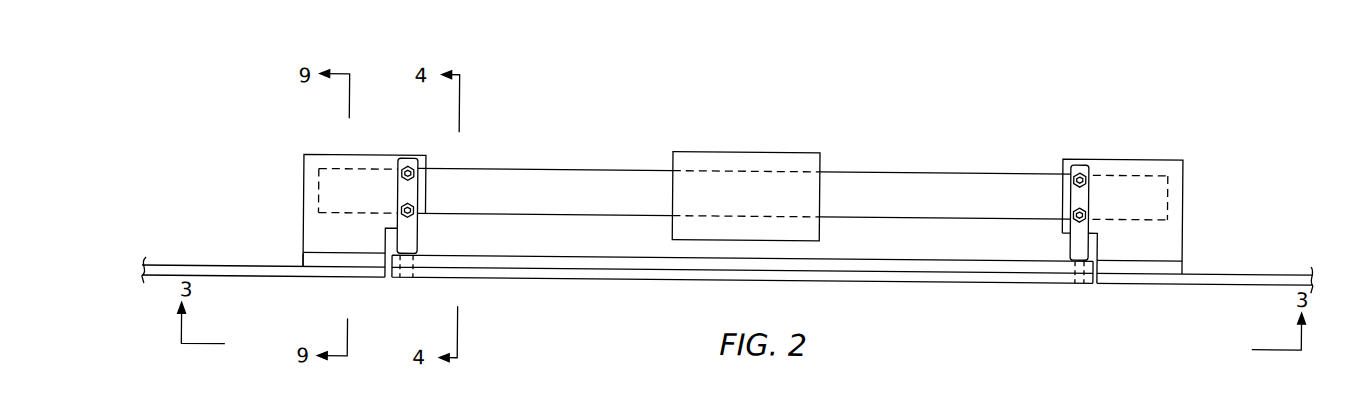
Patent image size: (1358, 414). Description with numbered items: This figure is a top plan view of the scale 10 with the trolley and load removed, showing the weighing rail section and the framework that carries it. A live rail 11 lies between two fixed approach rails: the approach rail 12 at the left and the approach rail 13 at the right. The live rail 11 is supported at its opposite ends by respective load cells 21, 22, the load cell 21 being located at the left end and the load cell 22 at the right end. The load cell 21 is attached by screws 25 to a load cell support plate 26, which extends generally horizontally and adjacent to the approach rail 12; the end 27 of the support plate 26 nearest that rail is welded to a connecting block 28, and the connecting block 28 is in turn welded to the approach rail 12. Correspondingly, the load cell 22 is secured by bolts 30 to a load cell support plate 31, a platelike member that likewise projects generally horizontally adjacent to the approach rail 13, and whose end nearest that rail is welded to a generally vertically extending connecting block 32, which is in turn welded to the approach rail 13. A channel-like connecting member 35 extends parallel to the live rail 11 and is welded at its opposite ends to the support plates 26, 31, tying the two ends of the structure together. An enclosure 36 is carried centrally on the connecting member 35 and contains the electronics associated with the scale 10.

The scale 10 is at (955, 120).
The live rail 11 is at (922, 271).
The approach rail 12 is at (262, 276).
The approach rail 13 is at (1263, 268).
The load cell 21 is at (410, 238).
The load cell 22 is at (1090, 188).
The screws 25 is at (404, 207).
The load cell support plate 26 is at (310, 160).
The end of the support plate 27 is at (330, 249).
The connecting block 28 is at (320, 261).
The bolts 30 is at (1078, 200).
The load cell support plate 31 is at (1177, 176).
The connecting block 32 is at (1175, 258).
The connecting member 35 is at (588, 191).
The enclosure 36 is at (757, 157).